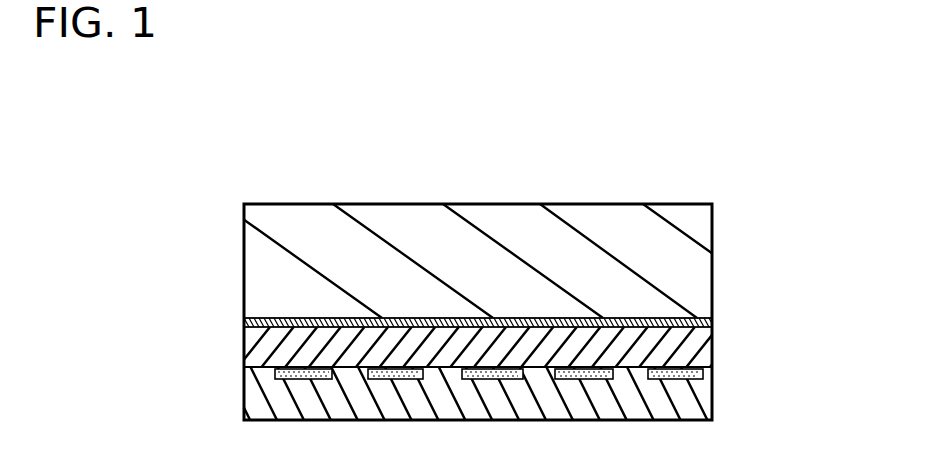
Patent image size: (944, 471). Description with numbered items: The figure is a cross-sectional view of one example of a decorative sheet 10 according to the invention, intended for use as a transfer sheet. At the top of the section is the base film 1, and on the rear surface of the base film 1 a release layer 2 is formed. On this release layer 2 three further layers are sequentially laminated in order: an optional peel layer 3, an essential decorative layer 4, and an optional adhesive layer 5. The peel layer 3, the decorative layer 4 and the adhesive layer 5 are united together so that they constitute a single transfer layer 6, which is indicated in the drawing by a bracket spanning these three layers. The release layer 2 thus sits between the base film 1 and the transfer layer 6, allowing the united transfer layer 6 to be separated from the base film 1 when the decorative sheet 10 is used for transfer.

The decorative sheet 10 is at (615, 162).
The base film 1 is at (672, 257).
The release layer 2 is at (690, 316).
The peel layer 3 is at (687, 347).
The decorative layer 4 is at (700, 374).
The adhesive layer 5 is at (690, 405).
The transfer layer 6 is at (538, 374).